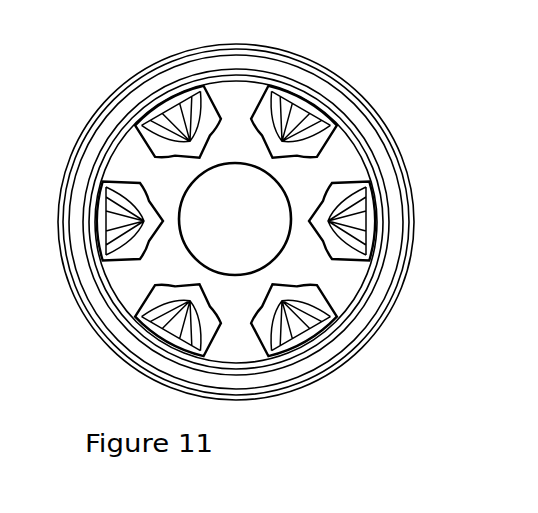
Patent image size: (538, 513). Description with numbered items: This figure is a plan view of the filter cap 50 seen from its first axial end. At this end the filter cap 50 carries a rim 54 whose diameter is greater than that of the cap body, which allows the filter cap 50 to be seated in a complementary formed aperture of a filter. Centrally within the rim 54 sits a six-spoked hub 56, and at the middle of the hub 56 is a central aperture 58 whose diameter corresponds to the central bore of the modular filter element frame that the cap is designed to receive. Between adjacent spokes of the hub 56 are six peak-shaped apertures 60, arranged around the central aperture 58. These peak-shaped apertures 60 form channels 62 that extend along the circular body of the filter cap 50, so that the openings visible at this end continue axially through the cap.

The filter cap 50 is at (98, 45).
The rim 54 is at (93, 118).
The six-spoked hub 56 is at (305, 178).
The central aperture 58 is at (262, 216).
The peak-shaped apertures 60 is at (174, 109).
The channels 62 is at (307, 302).